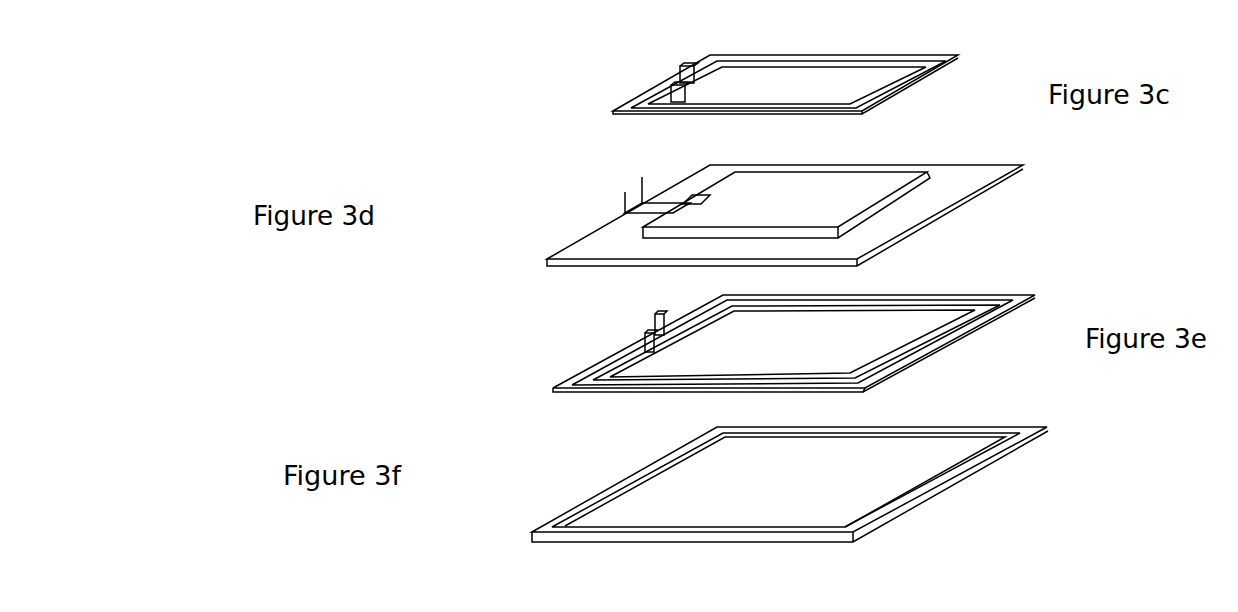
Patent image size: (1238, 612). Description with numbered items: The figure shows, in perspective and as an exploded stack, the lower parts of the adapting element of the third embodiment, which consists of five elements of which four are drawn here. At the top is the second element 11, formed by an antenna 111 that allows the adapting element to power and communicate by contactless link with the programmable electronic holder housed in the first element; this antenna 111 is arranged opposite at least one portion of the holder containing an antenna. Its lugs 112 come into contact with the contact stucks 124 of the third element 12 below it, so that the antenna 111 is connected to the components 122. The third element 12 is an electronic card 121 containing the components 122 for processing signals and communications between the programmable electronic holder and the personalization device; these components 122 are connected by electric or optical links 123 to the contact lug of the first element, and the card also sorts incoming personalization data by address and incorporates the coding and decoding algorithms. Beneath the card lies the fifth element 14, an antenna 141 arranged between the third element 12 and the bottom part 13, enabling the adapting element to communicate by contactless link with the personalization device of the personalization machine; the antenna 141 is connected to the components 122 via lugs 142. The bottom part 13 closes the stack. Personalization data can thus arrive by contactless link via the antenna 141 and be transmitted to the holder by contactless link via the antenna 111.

In FIG. 3C, the second element 11 is at (926, 40).
In FIG. 3C, the antenna 111 is at (927, 73).
In FIG. 3C, the lugs 112 is at (682, 78).
In FIG. 3D, the third element 12 is at (556, 227).
In FIG. 3D, the electronic card 121 is at (913, 208).
In FIG. 3D, the components 122 is at (853, 193).
In FIG. 3D, the electric or optical links 123 is at (625, 200).
In FIG. 3D, the contact stucks 124 is at (698, 197).
In FIG. 3E, the fifth element 14 is at (567, 360).
In FIG. 3E, the antenna 141 is at (955, 340).
In FIG. 3E, the lugs 142 is at (655, 320).
In FIG. 3F, the bottom part 13 is at (584, 490).